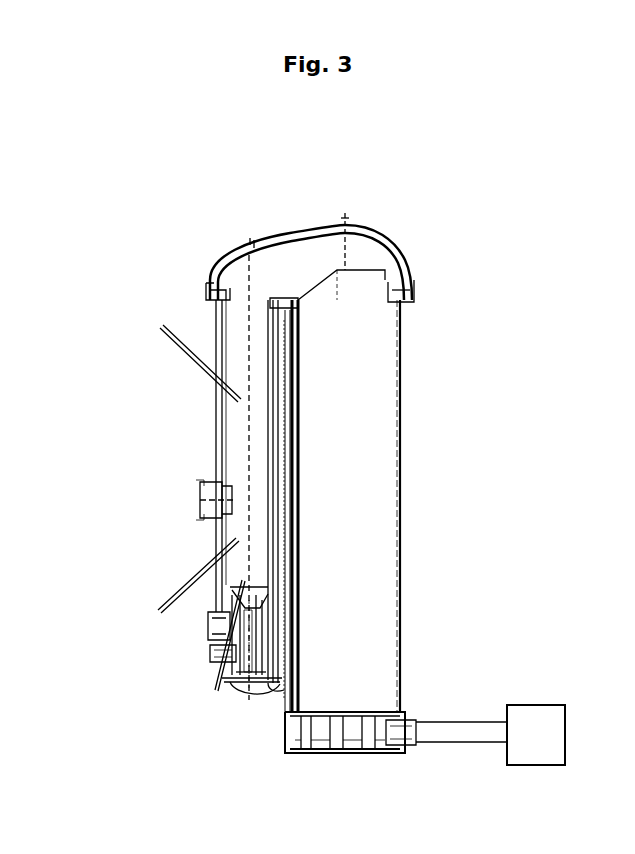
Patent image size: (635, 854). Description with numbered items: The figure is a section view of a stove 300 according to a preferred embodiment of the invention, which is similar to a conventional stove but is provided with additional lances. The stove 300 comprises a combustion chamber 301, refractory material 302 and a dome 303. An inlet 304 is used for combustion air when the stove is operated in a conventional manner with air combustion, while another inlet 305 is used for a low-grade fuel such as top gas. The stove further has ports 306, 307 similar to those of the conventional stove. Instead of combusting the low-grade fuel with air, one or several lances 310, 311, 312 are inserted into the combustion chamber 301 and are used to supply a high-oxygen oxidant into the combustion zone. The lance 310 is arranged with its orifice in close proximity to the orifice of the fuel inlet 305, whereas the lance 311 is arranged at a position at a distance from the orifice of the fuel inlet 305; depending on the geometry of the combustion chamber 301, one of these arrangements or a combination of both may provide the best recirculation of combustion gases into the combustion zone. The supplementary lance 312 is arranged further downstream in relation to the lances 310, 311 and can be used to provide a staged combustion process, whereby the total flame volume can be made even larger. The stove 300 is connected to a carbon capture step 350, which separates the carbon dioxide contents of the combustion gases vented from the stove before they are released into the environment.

The stove 300 is at (116, 216).
The combustion chamber 301 is at (250, 342).
The refractory material 302 is at (378, 514).
The dome 303 is at (302, 260).
The inlet 304 is at (212, 623).
The inlet 305 is at (213, 658).
The port 306 is at (440, 708).
The port 307 is at (200, 496).
The lance 310 is at (213, 648).
The lance 311 is at (186, 580).
The supplementary lance 312 is at (195, 366).
The carbon capture step 350 is at (537, 705).